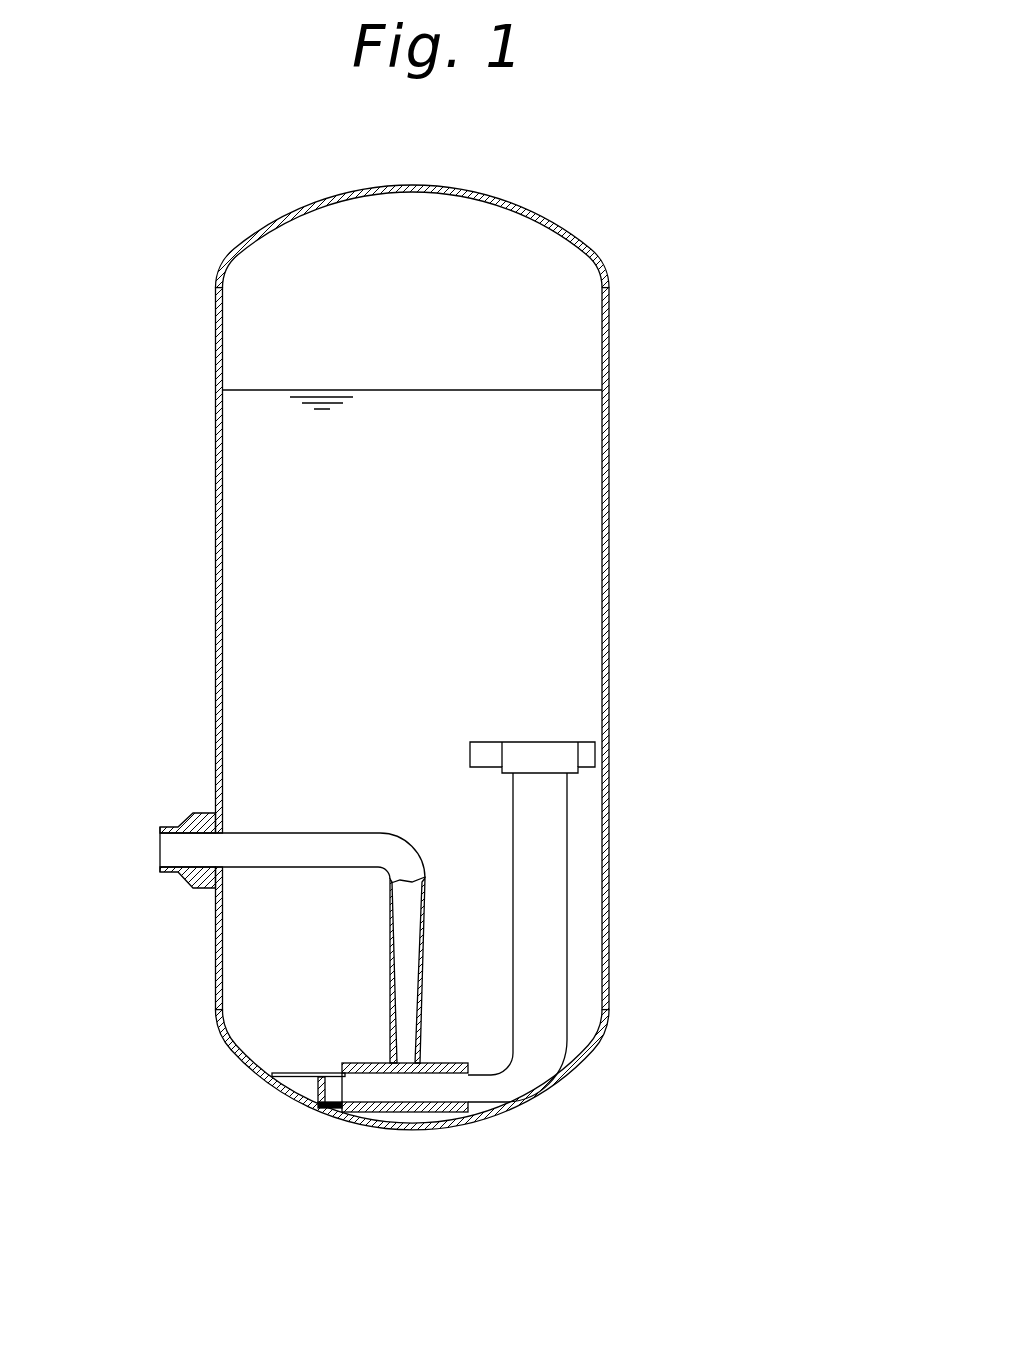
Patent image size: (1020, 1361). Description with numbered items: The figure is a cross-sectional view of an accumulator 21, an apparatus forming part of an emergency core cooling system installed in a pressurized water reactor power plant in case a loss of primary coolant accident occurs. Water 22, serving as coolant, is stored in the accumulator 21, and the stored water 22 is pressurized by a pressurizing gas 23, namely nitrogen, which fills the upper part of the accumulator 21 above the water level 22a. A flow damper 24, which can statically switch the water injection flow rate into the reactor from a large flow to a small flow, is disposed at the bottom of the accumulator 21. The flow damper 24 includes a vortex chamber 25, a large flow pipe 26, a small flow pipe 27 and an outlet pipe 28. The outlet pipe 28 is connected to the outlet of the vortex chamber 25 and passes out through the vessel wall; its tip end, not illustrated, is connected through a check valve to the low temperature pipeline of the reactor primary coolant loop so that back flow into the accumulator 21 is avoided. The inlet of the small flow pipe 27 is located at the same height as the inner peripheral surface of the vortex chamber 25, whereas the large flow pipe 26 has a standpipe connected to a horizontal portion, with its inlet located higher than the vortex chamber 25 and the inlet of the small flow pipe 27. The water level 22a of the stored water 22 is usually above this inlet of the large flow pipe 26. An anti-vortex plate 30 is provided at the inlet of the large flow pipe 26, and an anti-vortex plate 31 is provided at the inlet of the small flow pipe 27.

The accumulator 21 is at (570, 228).
The pressurizing gas 23 is at (557, 305).
The water 22 is at (563, 488).
The water level 22a is at (552, 390).
The flow damper 24 is at (575, 700).
The outlet pipe 28 is at (268, 832).
The anti-vortex plate 30 is at (587, 743).
The large flow pipe 26 is at (566, 1000).
The vortex chamber 25 is at (368, 1063).
The anti-vortex plate 31 is at (293, 1072).
The small flow pipe 27 is at (334, 1112).